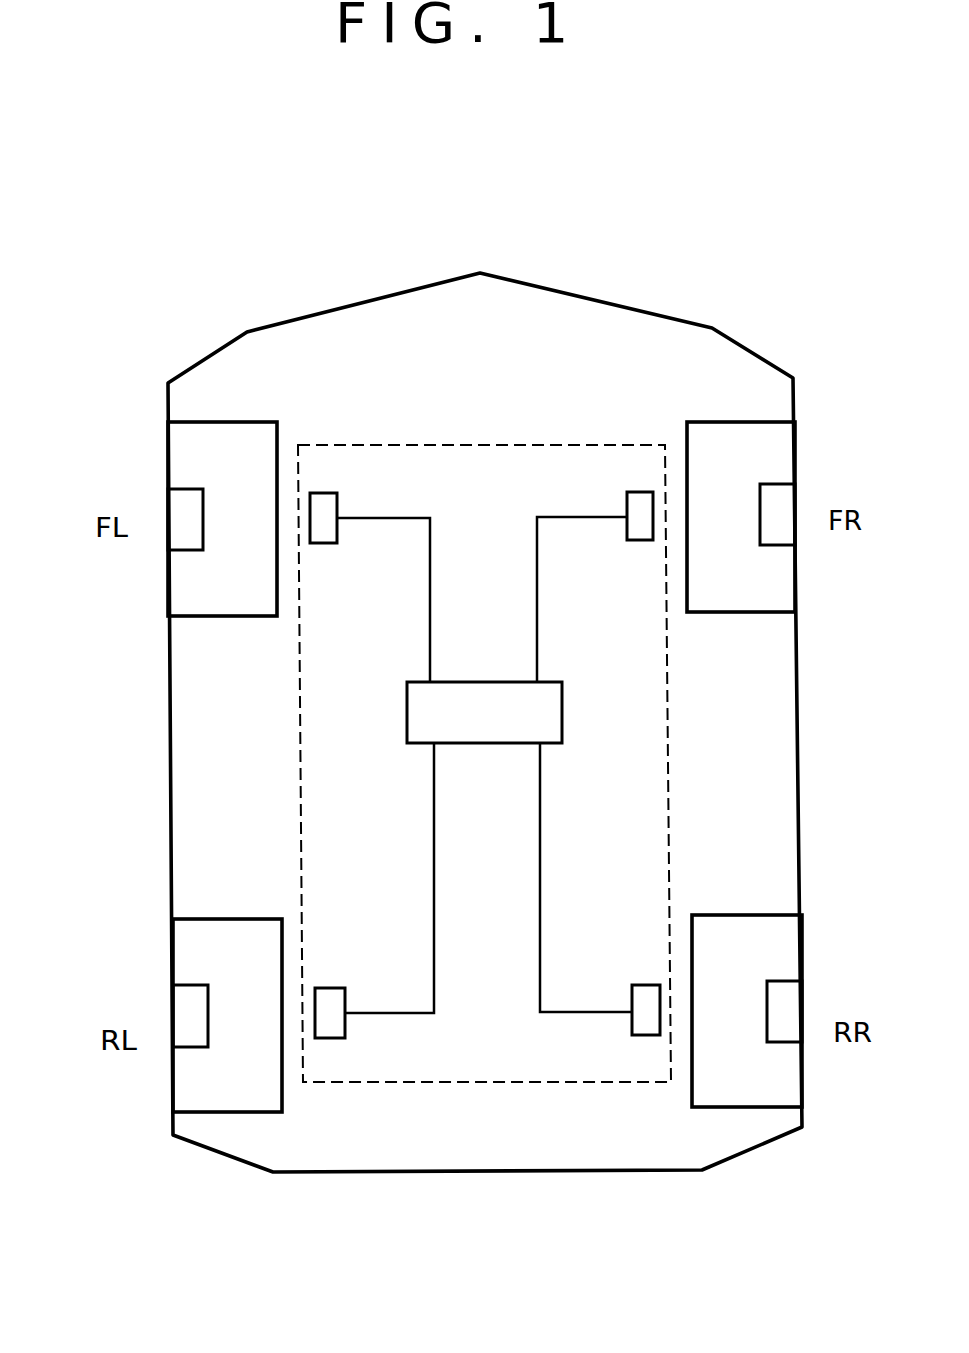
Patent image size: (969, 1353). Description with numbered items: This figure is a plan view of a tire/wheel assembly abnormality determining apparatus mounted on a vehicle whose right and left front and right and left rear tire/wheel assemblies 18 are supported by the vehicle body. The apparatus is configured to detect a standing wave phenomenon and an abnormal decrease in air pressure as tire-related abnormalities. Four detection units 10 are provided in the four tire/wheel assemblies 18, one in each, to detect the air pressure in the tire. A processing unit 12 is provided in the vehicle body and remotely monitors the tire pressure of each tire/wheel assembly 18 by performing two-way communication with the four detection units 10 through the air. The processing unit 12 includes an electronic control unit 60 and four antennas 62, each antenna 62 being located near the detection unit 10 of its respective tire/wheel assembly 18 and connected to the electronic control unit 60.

The detection unit 10 is at (182, 521).
The processing unit 12 is at (575, 444).
The tire/wheel assembly 18 is at (185, 450).
The electronic control unit 60 is at (545, 690).
The antenna 62 is at (330, 527).